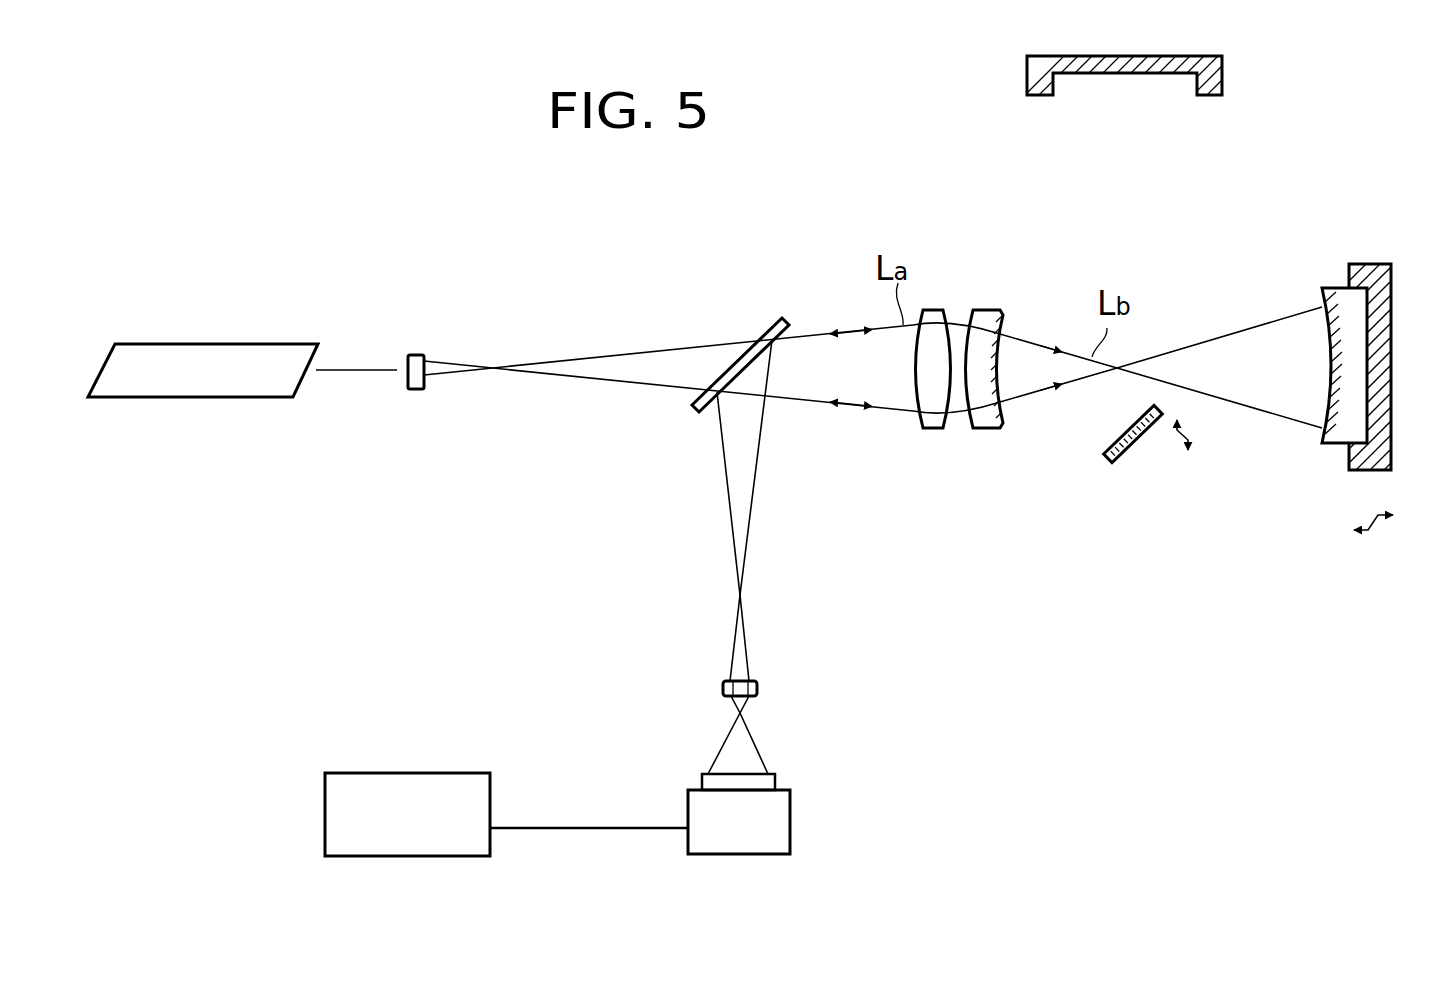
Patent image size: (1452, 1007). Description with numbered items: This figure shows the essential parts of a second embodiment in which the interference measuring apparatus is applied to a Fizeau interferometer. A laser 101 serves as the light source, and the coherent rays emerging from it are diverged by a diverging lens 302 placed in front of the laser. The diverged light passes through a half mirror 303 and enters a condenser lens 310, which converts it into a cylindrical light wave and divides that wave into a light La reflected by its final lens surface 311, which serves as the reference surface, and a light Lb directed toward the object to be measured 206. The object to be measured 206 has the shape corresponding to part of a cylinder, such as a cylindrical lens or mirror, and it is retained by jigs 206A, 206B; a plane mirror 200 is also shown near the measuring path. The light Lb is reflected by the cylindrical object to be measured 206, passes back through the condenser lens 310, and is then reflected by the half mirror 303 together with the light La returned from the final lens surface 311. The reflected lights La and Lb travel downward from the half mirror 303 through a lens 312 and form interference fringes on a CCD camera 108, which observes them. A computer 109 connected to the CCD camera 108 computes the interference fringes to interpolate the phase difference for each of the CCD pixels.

The laser 101 is at (217, 344).
The diverging lens 302 is at (420, 355).
The half mirror 303 is at (775, 320).
The condenser lens 310 is at (983, 382).
The final lens surface 311 is at (998, 358).
The lens 312 is at (757, 688).
The plane mirror 200 is at (1132, 457).
The object to be measured 206 is at (1320, 433).
The jig 206A is at (1375, 264).
The jig 206B is at (1222, 92).
The CCD camera 108 is at (790, 825).
The computer 109 is at (410, 773).